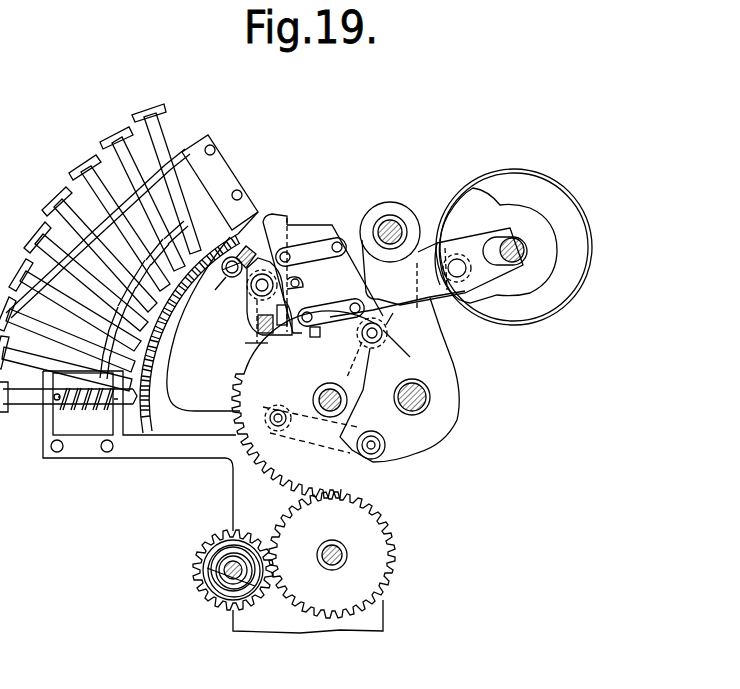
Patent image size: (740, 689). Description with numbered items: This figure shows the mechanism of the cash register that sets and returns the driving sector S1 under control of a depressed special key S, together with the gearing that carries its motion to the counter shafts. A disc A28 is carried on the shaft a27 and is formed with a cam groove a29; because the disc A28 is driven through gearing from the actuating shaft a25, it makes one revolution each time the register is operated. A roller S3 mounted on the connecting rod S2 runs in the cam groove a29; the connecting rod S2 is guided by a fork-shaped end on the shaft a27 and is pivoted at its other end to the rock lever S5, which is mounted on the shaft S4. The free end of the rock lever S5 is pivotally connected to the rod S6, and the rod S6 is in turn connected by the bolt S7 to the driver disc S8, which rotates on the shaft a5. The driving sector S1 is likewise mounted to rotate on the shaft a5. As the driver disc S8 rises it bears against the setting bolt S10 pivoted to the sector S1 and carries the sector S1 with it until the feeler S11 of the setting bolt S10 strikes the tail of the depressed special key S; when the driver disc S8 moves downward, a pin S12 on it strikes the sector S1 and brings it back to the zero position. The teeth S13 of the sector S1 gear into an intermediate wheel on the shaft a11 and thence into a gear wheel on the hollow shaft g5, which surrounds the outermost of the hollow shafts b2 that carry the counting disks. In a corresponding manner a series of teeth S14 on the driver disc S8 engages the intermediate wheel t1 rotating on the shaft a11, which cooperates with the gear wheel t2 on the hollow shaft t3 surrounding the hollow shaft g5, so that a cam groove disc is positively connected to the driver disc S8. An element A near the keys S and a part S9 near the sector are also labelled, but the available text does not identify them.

The special key S is at (84, 173).
The plate A is at (233, 184).
The driving sector S1 is at (367, 236).
The connecting rod S2 is at (452, 300).
The roller S3 is at (463, 296).
The shaft S4 is at (392, 222).
The rock lever S5 is at (447, 413).
The rod S6 is at (358, 455).
The bolt S7 is at (281, 431).
The driver disc S8 is at (276, 363).
The link S9 is at (309, 332).
The setting bolt S10 is at (290, 226).
The feeler S11 is at (259, 224).
The pin S12 is at (376, 348).
The teeth S13 is at (240, 386).
The series of teeth S14 is at (257, 453).
The shaft a5 is at (316, 398).
The shaft a11 is at (341, 556).
The actuating shaft a25 is at (427, 393).
The shaft a27 is at (527, 253).
The disc A28 is at (553, 182).
The cam groove a29 is at (576, 221).
The intermediate wheel t1 is at (386, 576).
The gear wheel t2 is at (216, 537).
The hollow shaft t3 is at (210, 576).
The hollow shafts b2 is at (214, 562).
The hollow shaft g5 is at (217, 597).